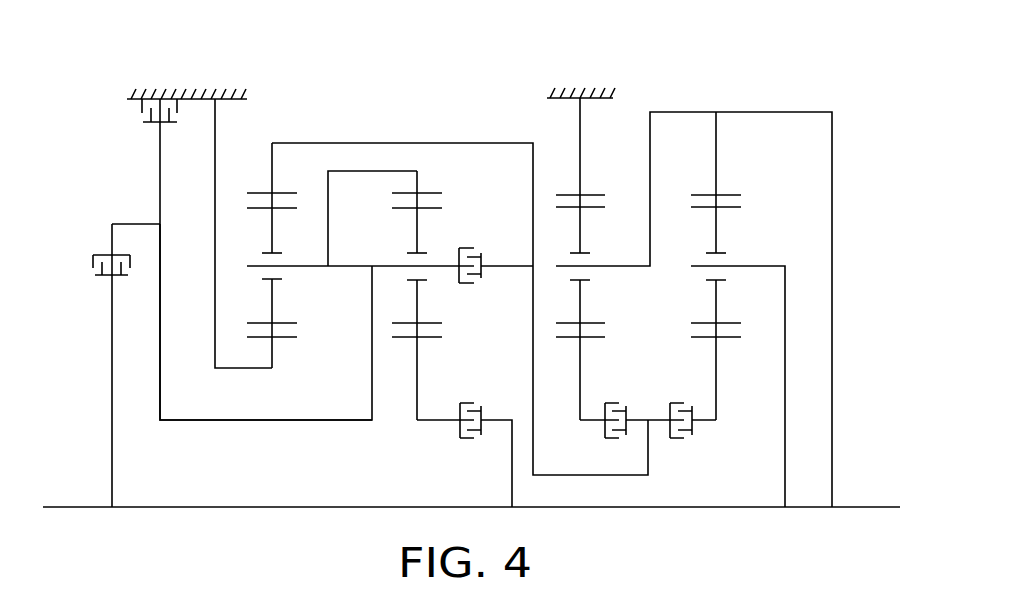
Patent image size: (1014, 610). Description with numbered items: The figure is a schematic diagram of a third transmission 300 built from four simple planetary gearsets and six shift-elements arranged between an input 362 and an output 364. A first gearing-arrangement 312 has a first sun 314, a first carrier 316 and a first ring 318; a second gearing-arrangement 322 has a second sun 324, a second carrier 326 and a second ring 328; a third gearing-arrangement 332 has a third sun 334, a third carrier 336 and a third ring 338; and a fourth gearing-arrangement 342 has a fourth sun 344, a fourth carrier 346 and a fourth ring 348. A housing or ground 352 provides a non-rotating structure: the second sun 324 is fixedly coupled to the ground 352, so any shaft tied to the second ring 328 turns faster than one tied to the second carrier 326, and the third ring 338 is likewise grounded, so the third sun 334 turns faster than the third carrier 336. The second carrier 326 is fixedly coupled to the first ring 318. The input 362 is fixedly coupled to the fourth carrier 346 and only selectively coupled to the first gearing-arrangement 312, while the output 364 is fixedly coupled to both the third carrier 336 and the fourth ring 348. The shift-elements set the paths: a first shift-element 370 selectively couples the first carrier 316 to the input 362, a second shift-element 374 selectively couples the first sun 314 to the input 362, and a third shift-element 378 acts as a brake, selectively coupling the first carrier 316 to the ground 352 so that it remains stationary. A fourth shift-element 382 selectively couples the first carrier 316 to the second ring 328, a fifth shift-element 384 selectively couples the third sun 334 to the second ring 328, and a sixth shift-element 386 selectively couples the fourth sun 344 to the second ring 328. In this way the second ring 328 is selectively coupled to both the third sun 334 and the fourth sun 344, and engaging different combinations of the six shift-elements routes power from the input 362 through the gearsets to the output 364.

The third transmission 300 is at (125, 58).
The ground 352 is at (210, 98).
The third shift-element 378 is at (147, 123).
The first shift-element 370 is at (93, 255).
The second ring 328 is at (272, 160).
The second carrier 326 is at (256, 256).
The second sun 324 is at (275, 345).
The second gearing-arrangement 322 is at (270, 405).
The first ring 318 is at (417, 188).
The first carrier 316 is at (400, 256).
The first sun 314 is at (418, 353).
The first gearing-arrangement 312 is at (406, 463).
The fourth shift-element 382 is at (481, 262).
The second shift-element 374 is at (481, 414).
The third ring 338 is at (580, 172).
The third carrier 336 is at (611, 256).
The third sun 334 is at (580, 353).
The third gearing-arrangement 332 is at (572, 463).
The fifth shift-element 384 is at (627, 414).
The sixth shift-element 386 is at (665, 430).
The fourth ring 348 is at (716, 172).
The fourth carrier 346 is at (752, 256).
The fourth sun 344 is at (717, 393).
The fourth gearing-arrangement 342 is at (729, 463).
The input 362 is at (96, 508).
The output 364 is at (853, 508).